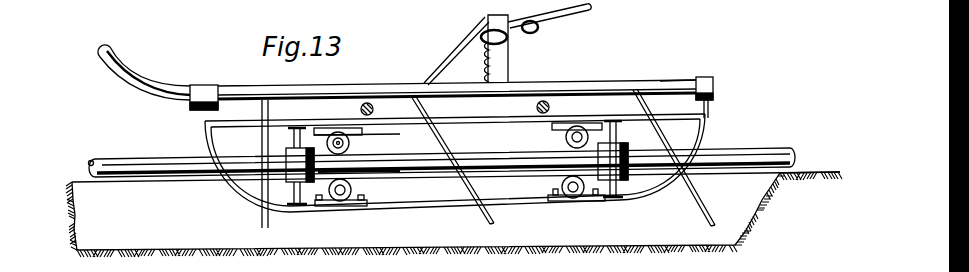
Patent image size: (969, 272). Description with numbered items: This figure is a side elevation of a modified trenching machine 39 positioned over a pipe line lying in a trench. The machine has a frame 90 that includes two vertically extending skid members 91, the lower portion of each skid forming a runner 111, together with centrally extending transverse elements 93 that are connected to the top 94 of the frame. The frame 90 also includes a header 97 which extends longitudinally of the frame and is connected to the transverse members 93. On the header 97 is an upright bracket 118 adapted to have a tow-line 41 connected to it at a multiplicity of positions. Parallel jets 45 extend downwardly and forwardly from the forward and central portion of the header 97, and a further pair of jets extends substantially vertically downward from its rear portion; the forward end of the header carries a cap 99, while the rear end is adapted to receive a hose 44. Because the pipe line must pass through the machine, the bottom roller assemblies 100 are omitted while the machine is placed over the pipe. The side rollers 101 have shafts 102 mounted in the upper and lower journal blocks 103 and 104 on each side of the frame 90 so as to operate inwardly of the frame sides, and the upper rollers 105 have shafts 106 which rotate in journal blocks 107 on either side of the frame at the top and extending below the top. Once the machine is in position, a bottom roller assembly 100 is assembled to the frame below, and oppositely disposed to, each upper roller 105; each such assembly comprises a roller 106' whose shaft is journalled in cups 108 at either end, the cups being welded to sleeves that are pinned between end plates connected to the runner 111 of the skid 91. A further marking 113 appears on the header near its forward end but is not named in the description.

The machine 39 is at (461, 163).
The tow-line 41 is at (568, 12).
The hose 44 is at (173, 96).
The jets 45 is at (492, 224).
The frame 90 is at (405, 212).
The skid members 91 is at (210, 140).
The transverse elements 93 is at (537, 107).
The top of the frame 94 is at (609, 114).
The header 97 is at (634, 81).
The cap 99 is at (716, 86).
The bottom roller assemblies 100 is at (337, 208).
The side rollers 101 is at (300, 165).
The shafts 102 is at (299, 141).
The upper journal blocks 103 is at (298, 126).
The lower journal blocks 104 is at (302, 207).
The upper rollers 105 is at (352, 148).
The shafts 106 is at (359, 134).
The roller 106' is at (373, 190).
The journal blocks 107 is at (366, 126).
The cups 108 is at (354, 168).
The runner 111 is at (608, 207).
The rail end portion 113 is at (688, 66).
The upright bracket 118 is at (503, 63).